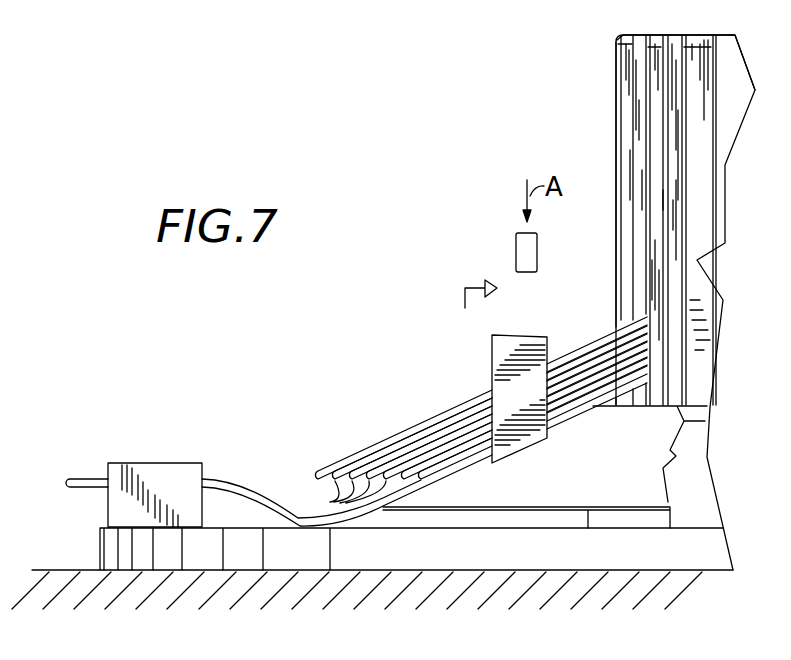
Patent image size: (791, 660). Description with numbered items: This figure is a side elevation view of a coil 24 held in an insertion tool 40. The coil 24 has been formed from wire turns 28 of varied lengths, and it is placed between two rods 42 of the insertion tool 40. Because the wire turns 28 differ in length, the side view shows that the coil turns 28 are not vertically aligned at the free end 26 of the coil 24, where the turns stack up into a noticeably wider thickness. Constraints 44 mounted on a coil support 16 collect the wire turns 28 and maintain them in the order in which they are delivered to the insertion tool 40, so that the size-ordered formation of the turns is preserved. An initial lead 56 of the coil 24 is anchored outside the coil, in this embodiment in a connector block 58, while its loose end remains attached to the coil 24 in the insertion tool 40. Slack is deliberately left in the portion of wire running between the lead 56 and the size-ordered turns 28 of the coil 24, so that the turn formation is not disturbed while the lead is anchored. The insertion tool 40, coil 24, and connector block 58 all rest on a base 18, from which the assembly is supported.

The coil support 16 is at (573, 492).
The base 18 is at (482, 521).
The coil 24 is at (596, 410).
The free end 26 is at (334, 457).
The wire turns 28 is at (331, 501).
The insertion tool 40 is at (612, 124).
The rods 42 is at (723, 34).
The constraints 44 is at (520, 347).
The lead 56 is at (538, 256).
The connector block 58 is at (140, 471).